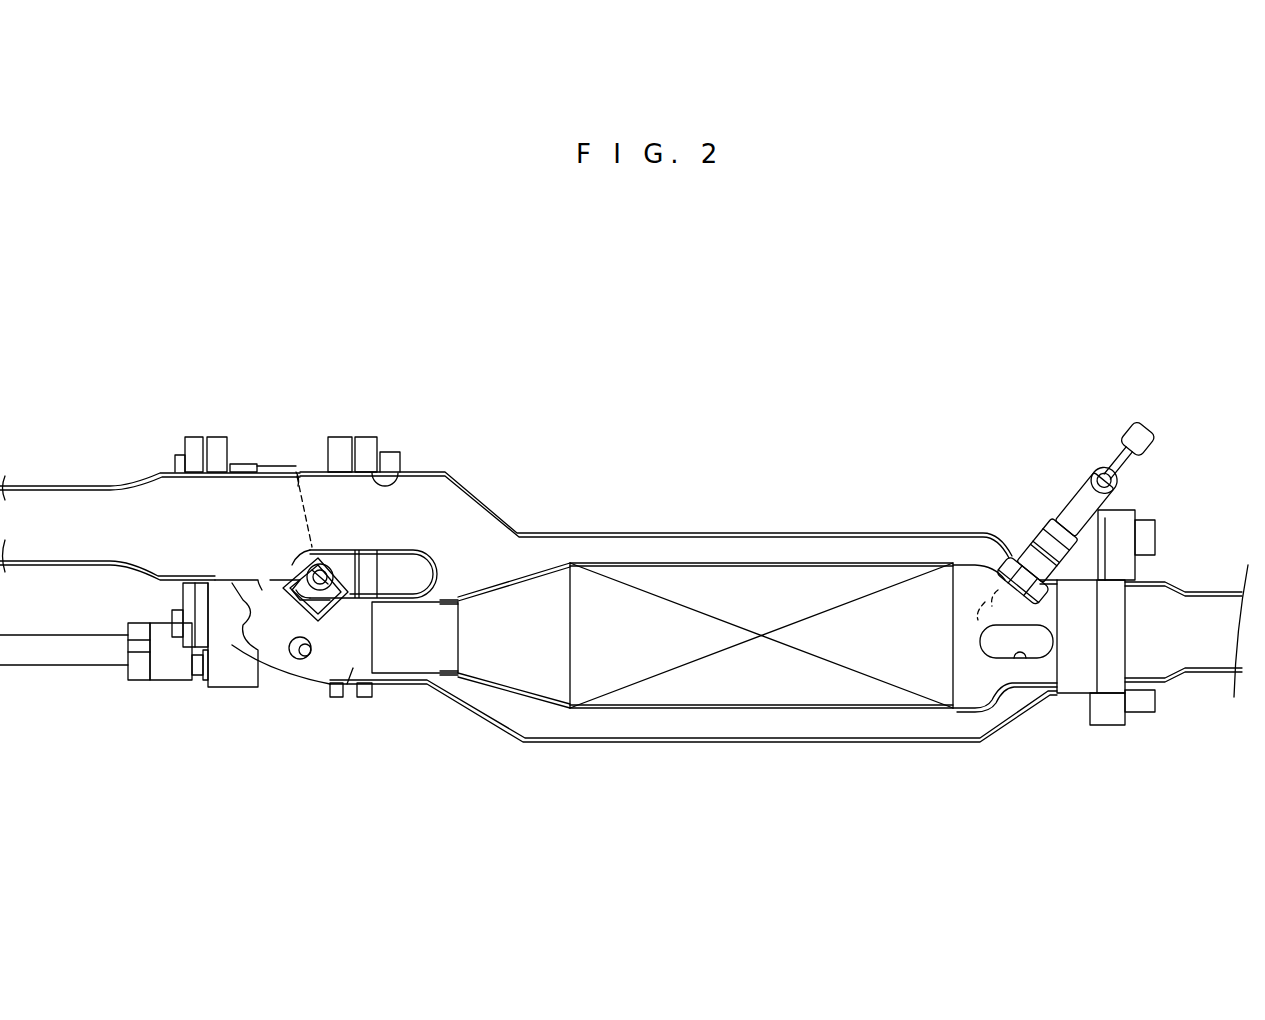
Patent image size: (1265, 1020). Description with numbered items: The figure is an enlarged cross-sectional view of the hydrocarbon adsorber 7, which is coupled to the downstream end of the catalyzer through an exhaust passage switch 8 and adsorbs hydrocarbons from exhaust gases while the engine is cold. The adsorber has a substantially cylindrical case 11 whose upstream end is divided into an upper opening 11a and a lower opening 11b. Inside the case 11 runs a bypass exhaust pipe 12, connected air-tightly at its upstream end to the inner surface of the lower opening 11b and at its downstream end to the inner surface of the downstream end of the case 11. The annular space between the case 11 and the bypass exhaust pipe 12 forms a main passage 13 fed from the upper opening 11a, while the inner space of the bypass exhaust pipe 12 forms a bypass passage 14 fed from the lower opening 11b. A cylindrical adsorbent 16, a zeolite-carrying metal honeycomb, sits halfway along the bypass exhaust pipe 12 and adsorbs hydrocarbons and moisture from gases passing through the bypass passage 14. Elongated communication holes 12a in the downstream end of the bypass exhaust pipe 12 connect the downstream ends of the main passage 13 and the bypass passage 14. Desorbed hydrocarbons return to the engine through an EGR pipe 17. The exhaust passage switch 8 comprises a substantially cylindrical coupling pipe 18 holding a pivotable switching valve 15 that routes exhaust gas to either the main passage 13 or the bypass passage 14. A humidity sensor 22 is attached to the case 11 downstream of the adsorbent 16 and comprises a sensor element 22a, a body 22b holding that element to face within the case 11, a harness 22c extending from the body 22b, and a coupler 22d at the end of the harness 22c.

The hydrocarbon adsorber 7 is at (726, 360).
The exhaust passage switch 8 is at (302, 360).
The case 11 is at (797, 532).
The upper opening 11a is at (399, 485).
The lower opening 11b is at (348, 676).
The bypass exhaust pipe 12 is at (498, 688).
The communication holes 12a is at (1020, 660).
The main passage 13 is at (481, 558).
The bypass passage 14 is at (533, 648).
The switching valve 15 is at (300, 531).
The adsorbent 16 is at (787, 700).
The EGR pipe 17 is at (63, 667).
The coupling pipe 18 is at (276, 465).
The humidity sensor 22 is at (1056, 505).
The sensor element 22a is at (1023, 581).
The body 22b is at (1048, 550).
The harness 22c is at (1118, 463).
The coupler 22d is at (1137, 438).